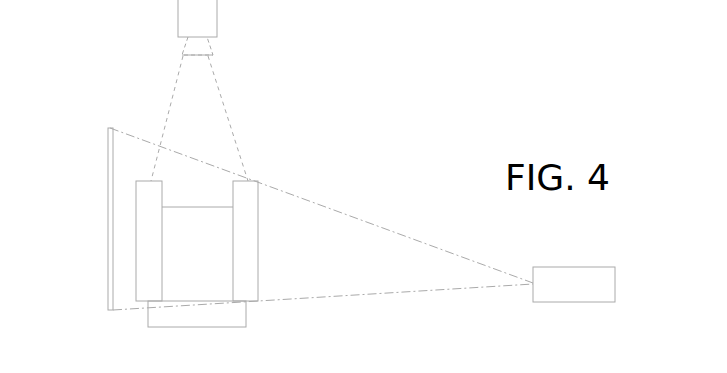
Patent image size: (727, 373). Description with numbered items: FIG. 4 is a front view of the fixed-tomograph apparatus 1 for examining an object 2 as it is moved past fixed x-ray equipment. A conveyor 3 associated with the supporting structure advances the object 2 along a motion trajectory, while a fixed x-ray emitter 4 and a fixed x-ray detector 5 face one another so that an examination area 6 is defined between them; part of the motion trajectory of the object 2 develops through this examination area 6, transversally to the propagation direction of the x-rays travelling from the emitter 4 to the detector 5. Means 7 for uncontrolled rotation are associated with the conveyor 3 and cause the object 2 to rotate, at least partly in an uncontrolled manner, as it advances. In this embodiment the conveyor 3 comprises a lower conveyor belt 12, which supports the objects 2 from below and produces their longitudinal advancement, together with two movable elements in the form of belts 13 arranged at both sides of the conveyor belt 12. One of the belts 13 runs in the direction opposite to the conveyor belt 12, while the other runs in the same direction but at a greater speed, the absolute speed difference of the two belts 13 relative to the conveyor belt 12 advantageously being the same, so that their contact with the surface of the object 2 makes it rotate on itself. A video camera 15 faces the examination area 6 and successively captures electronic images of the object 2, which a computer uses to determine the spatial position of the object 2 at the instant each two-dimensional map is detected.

The inspection system 1 is at (413, 157).
The object 2 is at (193, 238).
The conveyor 3 is at (140, 328).
The x-ray emitter 4 is at (568, 288).
The x-ray detector 5 is at (110, 250).
The examination area 6 is at (88, 5).
The means for uncontrolled rotation 7 is at (265, 273).
The conveyor belt 12 is at (217, 362).
The belts 13 is at (148, 225).
The video cameras 15 is at (195, 18).